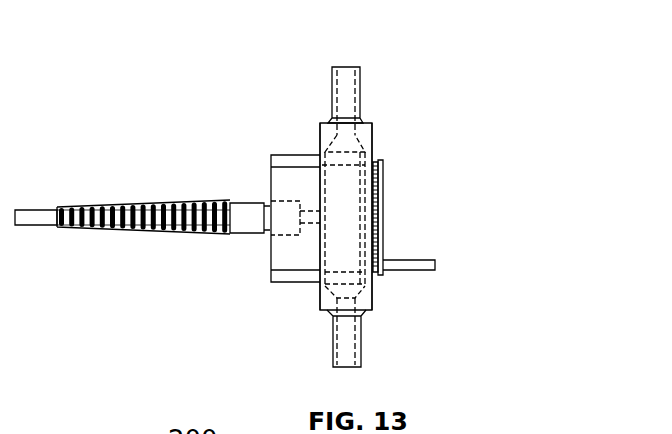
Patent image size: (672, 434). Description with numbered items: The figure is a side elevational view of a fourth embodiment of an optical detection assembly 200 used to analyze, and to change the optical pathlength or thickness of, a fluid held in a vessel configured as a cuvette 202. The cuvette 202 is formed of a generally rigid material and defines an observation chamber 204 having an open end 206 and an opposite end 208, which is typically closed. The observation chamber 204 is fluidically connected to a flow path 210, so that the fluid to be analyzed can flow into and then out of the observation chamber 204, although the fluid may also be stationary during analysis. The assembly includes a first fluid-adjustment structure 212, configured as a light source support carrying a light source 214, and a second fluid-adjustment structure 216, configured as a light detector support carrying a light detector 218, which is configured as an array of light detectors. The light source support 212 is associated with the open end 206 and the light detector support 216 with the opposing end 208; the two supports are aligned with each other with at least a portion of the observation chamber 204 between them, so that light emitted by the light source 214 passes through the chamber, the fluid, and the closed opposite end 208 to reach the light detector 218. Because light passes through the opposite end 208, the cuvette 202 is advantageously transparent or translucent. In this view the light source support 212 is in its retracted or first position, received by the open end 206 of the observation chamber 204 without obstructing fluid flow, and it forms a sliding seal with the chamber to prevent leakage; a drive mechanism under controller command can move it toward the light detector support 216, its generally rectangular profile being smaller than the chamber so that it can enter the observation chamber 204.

The optical detection assembly 200 is at (392, 92).
The cuvette 202 is at (323, 314).
The observation chamber 204 is at (355, 273).
The open end 206 is at (319, 140).
The opposite end 208 is at (377, 127).
The flow path 210 is at (347, 67).
The first fluid-adjustment structure 212 is at (278, 283).
The light source 214 is at (317, 205).
The second fluid-adjustment structure 216 is at (383, 205).
The light detector 218 is at (377, 162).